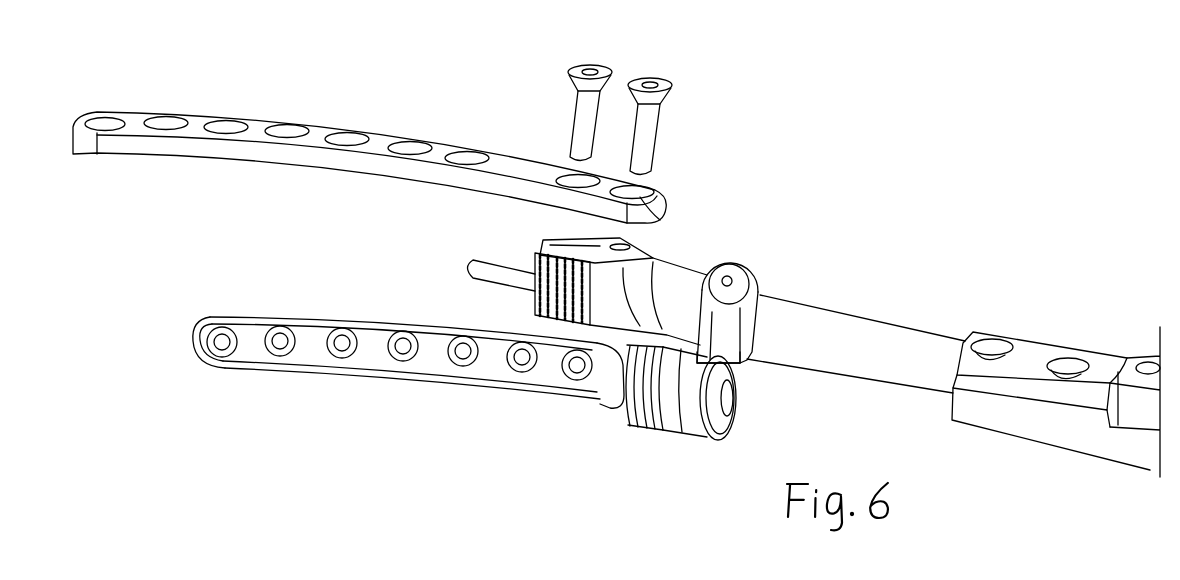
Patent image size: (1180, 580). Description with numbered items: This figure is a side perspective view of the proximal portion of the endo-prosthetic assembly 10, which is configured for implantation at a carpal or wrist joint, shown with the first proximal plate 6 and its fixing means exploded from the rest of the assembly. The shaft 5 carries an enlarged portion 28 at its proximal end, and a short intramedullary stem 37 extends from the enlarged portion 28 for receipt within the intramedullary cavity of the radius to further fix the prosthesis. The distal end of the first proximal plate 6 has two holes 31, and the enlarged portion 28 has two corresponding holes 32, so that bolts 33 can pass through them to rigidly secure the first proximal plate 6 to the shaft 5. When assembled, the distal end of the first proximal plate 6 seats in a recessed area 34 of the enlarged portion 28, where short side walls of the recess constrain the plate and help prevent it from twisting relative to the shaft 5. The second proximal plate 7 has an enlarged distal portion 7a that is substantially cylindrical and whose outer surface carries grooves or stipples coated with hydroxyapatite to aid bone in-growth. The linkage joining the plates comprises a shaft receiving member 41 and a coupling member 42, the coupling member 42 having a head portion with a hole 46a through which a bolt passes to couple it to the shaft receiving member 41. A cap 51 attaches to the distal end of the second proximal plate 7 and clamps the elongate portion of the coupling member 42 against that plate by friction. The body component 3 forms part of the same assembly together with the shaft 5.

The body component 3 is at (1037, 347).
The shaft 5 is at (887, 350).
The first proximal plate 6 is at (318, 140).
The second proximal plate 7 is at (365, 365).
The enlarged distal portion 7a is at (667, 420).
The endo-prosthetic assembly 10 is at (885, 117).
The enlarged portion 28 is at (570, 297).
The holes 31 is at (633, 188).
The holes 32 is at (562, 257).
The bolts 33 is at (610, 70).
The recessed area 34 is at (448, 218).
The intramedullary stem 37 is at (492, 272).
The shaft receiving member 41 is at (760, 293).
The coupling member 42 is at (717, 338).
The hole 46a is at (727, 281).
The cap 51 is at (705, 427).